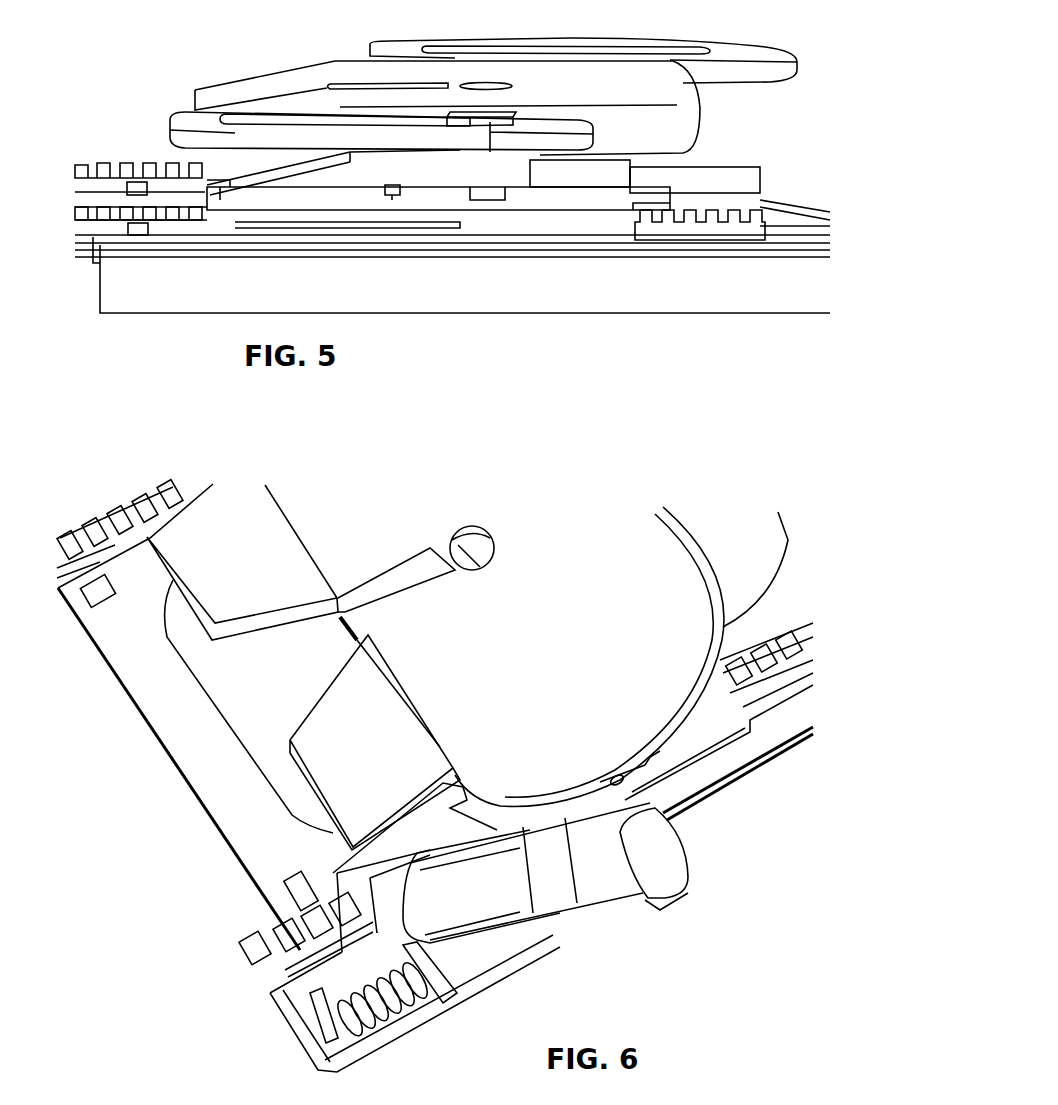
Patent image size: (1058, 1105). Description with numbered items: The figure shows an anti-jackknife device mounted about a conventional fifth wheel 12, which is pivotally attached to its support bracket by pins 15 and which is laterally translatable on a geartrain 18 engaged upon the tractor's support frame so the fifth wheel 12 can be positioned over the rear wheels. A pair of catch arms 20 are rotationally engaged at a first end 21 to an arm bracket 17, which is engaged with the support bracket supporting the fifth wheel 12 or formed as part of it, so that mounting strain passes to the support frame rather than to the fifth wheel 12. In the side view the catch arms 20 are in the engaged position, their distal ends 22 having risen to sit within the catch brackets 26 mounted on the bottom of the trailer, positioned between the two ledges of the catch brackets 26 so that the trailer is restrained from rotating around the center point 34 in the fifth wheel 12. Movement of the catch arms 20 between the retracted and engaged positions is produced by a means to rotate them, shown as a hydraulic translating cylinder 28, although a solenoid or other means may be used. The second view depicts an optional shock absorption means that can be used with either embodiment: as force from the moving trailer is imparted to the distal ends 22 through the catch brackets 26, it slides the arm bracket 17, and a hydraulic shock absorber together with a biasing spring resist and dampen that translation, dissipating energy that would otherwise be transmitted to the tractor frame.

In FIG. 5, the fifth wheel 12 is at (670, 95).
In FIG. 6, the fifth wheel 12 is at (633, 617).
In FIG. 6, the pins 15 is at (613, 777).
In FIG. 5, the arm bracket 17 is at (333, 203).
In FIG. 5, the geartrain 18 is at (85, 213).
In FIG. 6, the geartrain 18 is at (278, 927).
In FIG. 6, the catch arms 20 is at (523, 912).
In FIG. 6, the first end 21 is at (430, 933).
In FIG. 5, the distal end 22 is at (512, 120).
In FIG. 6, the distal end 22 is at (658, 862).
In FIG. 5, the catch brackets 26 is at (757, 50).
In FIG. 5, the hydraulic translating cylinder 28 is at (395, 190).
In FIG. 5, the center point 34 is at (487, 83).
In FIG. 6, the center point 34 is at (487, 542).